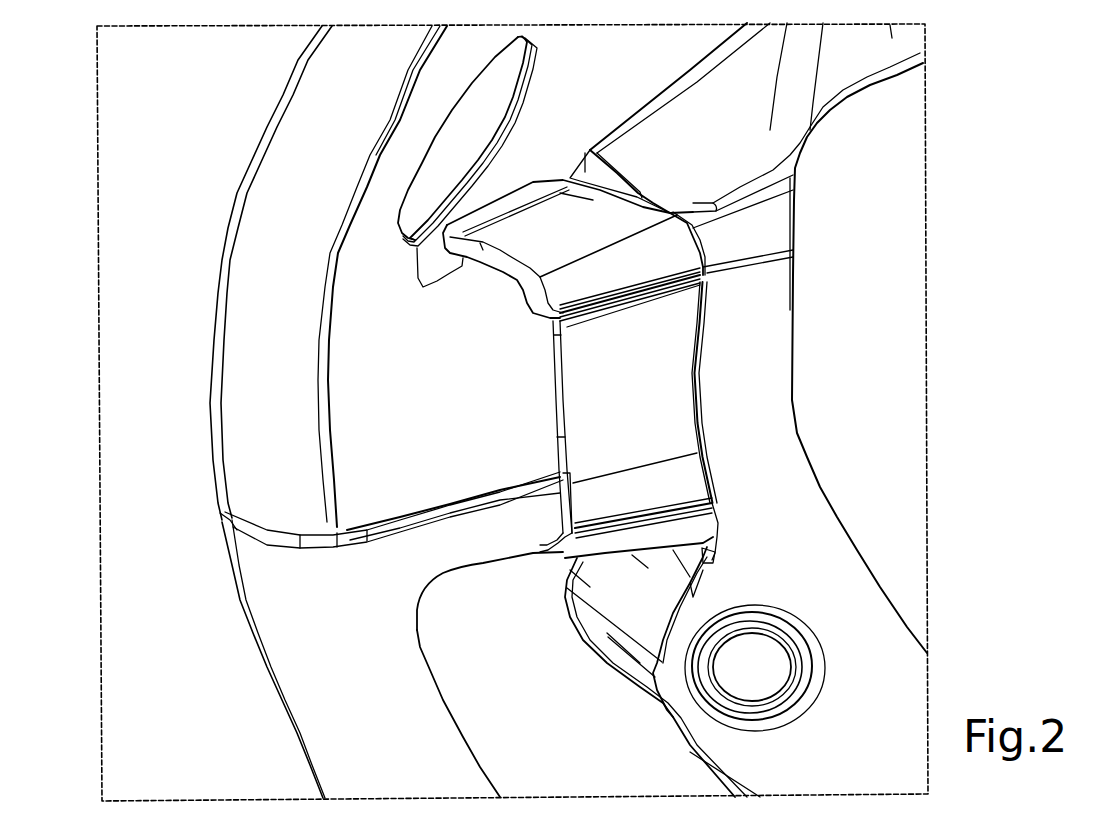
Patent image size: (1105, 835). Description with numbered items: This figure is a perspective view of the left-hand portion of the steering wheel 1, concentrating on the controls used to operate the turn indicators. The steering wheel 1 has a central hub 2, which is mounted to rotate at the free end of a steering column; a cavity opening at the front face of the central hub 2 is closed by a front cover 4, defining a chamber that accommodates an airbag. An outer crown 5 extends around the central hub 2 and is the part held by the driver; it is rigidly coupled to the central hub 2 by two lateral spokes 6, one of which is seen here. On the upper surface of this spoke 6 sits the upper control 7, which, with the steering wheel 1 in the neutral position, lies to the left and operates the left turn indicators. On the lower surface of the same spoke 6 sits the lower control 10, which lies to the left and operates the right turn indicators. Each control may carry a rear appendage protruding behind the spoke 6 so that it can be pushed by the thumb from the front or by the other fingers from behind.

The steering wheel 1 is at (180, 118).
The central hub 2 is at (945, 287).
The front cover 4 is at (903, 466).
The outer crown 5 is at (253, 322).
The lateral spoke 6 is at (488, 528).
The upper control 7 is at (543, 225).
The lower control 10 is at (597, 547).